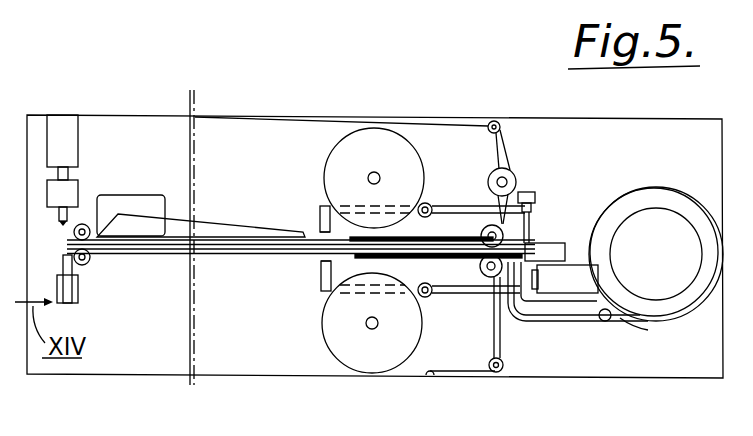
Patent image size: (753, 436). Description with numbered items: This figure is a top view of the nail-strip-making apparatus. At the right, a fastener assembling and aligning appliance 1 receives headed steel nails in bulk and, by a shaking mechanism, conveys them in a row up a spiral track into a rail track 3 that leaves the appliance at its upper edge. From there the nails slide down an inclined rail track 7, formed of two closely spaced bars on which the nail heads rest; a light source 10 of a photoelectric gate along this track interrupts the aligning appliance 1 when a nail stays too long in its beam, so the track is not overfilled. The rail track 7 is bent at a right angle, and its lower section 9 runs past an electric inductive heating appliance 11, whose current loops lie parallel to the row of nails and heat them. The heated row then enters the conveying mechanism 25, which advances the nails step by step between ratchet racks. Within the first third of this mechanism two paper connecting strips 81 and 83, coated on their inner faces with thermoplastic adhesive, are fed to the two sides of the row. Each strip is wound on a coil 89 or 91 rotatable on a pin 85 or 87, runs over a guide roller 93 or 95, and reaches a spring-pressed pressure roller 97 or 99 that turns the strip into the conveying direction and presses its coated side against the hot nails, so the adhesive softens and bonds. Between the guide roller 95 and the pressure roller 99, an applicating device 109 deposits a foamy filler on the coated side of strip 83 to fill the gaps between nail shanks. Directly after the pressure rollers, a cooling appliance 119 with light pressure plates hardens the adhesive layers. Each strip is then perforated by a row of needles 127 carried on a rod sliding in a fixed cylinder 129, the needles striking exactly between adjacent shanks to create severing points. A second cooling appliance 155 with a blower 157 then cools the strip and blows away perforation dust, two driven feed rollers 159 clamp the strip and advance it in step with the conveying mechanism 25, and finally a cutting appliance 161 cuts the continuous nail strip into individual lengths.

The fastener assembling and aligning appliance 1 is at (662, 268).
The rail track 3 is at (628, 320).
The rail track 7 is at (561, 323).
The lower section 9 is at (538, 288).
The light source 10 is at (606, 322).
The electric inductive heating appliance 11 is at (563, 283).
The conveying mechanism 25 is at (435, 235).
The connecting strip 81 is at (430, 376).
The connecting strip 83 is at (507, 168).
The pin 85 is at (370, 330).
The pin 87 is at (374, 172).
The coil 89 is at (333, 345).
The coil 91 is at (336, 152).
The guide roller 93 is at (494, 373).
The guide roller 95 is at (494, 120).
The pressure roller 97 is at (485, 276).
The pressure roller 99 is at (500, 233).
The applicating device 109 is at (519, 173).
The cooling appliance 119 is at (423, 229).
The needles 127 is at (317, 233).
The cylinder 129 is at (320, 218).
The second cooling appliance 155 is at (203, 226).
The blower 157 is at (132, 198).
The feed rollers 159 is at (90, 261).
The cutting appliance 161 is at (88, 149).